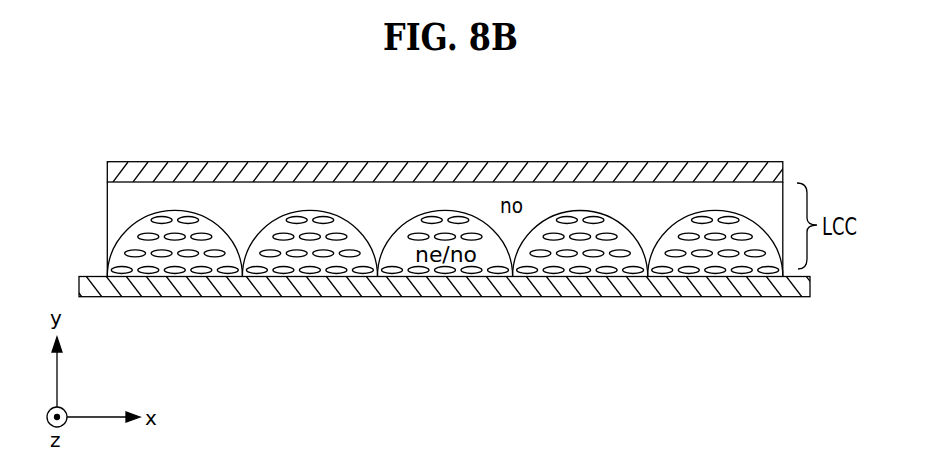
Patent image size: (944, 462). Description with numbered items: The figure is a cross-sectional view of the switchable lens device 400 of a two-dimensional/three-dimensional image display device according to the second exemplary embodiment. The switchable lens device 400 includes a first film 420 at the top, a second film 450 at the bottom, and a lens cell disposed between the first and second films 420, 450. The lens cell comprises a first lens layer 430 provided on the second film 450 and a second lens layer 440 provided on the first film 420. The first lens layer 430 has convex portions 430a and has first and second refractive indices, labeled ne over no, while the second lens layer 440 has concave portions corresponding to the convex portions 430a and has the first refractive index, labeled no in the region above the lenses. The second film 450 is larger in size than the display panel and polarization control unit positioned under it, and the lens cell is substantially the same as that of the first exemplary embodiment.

The switchable lens device 400 is at (172, 119).
The first film 420 is at (623, 170).
The second lens layer 440 is at (382, 195).
The first lens layer 430 is at (297, 262).
The convex portions 430a is at (396, 234).
The second film 450 is at (635, 285).